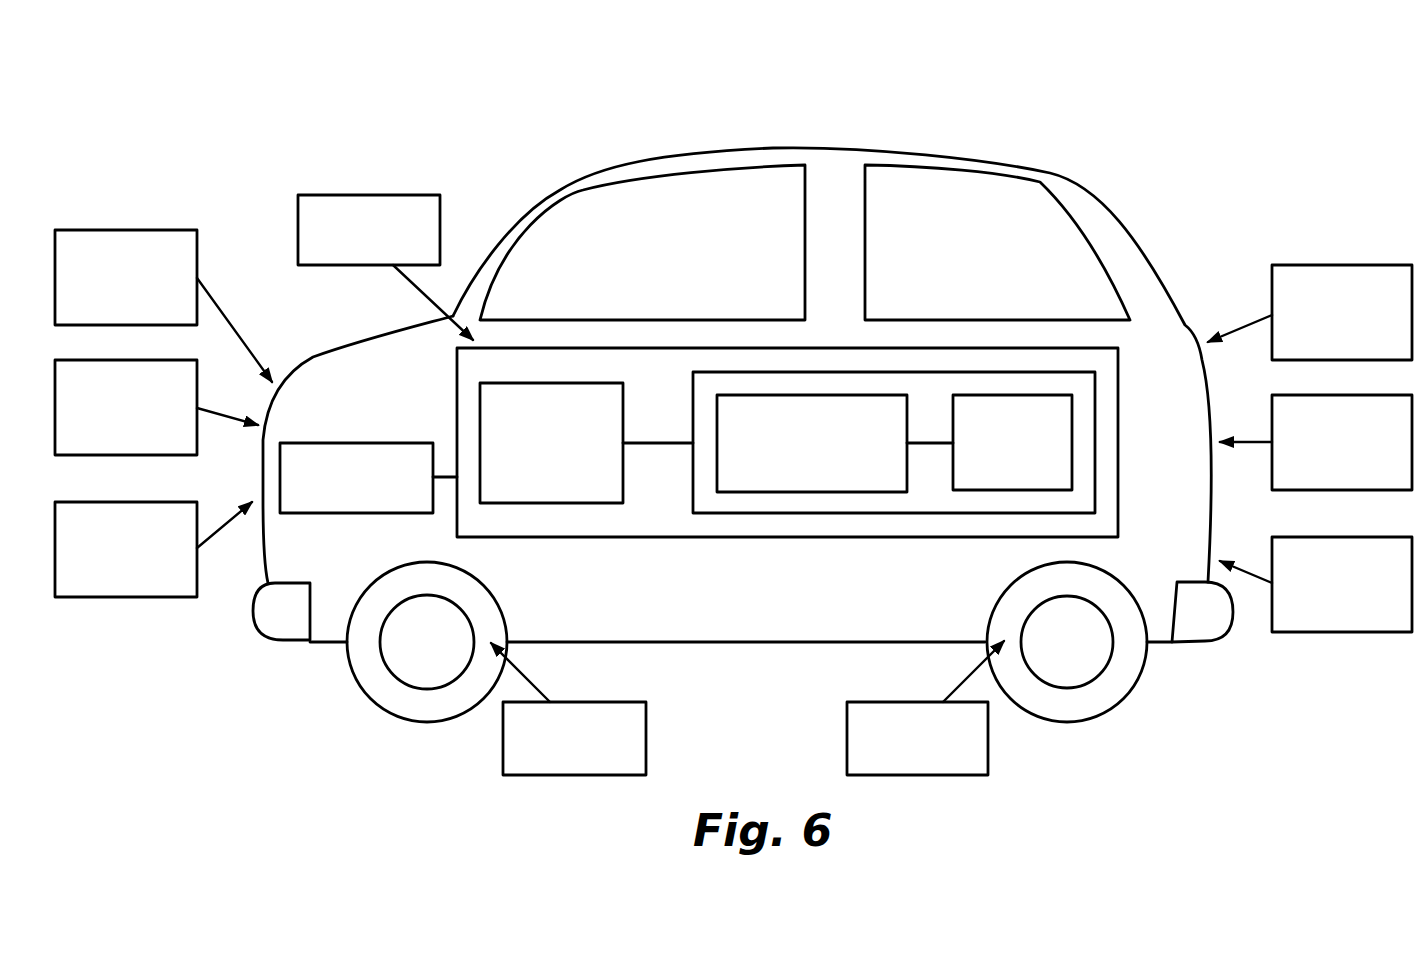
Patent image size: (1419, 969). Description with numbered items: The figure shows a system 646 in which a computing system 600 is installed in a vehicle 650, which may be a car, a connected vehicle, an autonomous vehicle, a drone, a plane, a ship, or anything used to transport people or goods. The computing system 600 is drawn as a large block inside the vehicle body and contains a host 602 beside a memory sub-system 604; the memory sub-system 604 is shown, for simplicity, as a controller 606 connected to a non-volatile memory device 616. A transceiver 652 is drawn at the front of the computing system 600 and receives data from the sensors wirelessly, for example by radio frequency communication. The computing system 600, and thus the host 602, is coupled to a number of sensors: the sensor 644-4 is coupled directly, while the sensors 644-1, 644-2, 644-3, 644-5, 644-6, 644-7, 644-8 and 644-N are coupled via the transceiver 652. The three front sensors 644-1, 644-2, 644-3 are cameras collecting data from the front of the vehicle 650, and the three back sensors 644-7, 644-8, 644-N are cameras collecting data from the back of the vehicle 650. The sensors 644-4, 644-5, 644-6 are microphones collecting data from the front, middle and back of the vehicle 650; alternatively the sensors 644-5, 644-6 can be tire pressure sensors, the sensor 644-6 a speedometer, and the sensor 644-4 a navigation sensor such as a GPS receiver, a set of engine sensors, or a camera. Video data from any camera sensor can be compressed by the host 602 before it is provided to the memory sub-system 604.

The system 646 is at (198, 68).
The vehicle 650 is at (592, 177).
The computing system 600 is at (635, 530).
The host 602 is at (551, 443).
The memory sub-system 604 is at (812, 507).
The controller 606 is at (812, 443).
The non-volatile memory device 616 is at (1060, 443).
The transceiver 652 is at (356, 478).
The sensor 644-1 is at (128, 214).
The sensor 644-2 is at (126, 456).
The sensor 644-3 is at (126, 598).
The sensor 644-4 is at (368, 181).
The sensor 644-5 is at (574, 776).
The sensor 644-6 is at (917, 776).
The sensor 644-7 is at (1343, 633).
The sensor 644-8 is at (1343, 491).
The sensor 644-N is at (1342, 265).